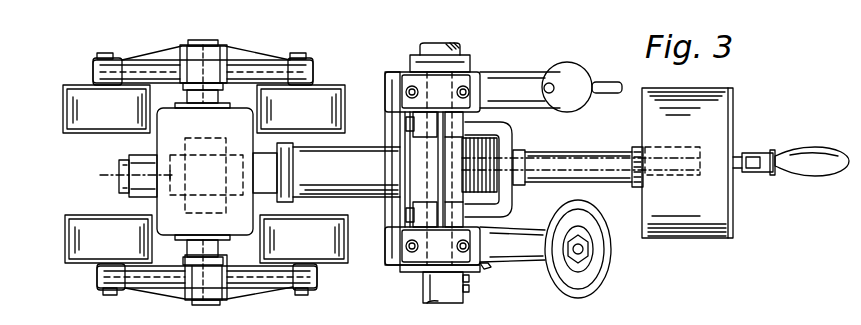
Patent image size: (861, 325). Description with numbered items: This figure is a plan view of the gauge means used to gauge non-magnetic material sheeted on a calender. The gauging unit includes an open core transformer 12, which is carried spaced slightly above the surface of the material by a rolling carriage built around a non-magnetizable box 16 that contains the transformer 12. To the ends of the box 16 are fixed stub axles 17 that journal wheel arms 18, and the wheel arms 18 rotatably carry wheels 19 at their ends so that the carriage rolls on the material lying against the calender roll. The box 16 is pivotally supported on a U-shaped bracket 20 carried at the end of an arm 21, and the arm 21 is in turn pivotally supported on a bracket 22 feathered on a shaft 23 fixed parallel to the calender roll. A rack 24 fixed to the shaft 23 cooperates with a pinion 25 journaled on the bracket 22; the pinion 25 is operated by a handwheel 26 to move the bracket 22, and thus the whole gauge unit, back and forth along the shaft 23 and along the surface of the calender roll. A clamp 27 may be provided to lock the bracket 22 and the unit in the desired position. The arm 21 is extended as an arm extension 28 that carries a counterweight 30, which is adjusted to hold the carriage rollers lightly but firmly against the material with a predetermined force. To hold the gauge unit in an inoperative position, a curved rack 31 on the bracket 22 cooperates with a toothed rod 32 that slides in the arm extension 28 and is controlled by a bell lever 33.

The open core transformer 12 is at (125, 177).
The non-magnetizable box 16 is at (157, 203).
The stub axles 17 is at (218, 94).
The wheel arms 18 is at (312, 72).
The wheels 19 is at (338, 88).
The U-shaped bracket 20 is at (135, 156).
The arm 21 is at (365, 186).
The bracket 22 is at (390, 270).
The shaft 23 is at (450, 294).
The rack 24 is at (470, 294).
The pinion 25 is at (490, 271).
The handwheel 26 is at (580, 278).
The clamp 27 is at (588, 70).
The arm extension 28 is at (585, 150).
The counterweight 30 is at (716, 110).
The curved rack 31 is at (500, 155).
The toothed rod 32 is at (502, 168).
The bell lever 33 is at (800, 146).